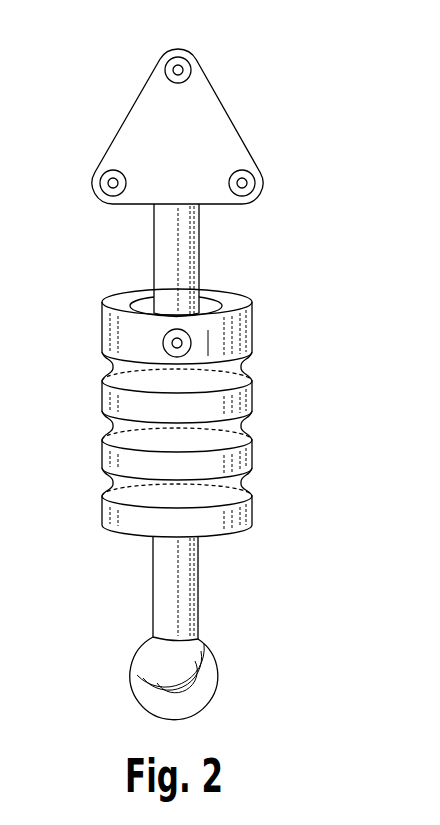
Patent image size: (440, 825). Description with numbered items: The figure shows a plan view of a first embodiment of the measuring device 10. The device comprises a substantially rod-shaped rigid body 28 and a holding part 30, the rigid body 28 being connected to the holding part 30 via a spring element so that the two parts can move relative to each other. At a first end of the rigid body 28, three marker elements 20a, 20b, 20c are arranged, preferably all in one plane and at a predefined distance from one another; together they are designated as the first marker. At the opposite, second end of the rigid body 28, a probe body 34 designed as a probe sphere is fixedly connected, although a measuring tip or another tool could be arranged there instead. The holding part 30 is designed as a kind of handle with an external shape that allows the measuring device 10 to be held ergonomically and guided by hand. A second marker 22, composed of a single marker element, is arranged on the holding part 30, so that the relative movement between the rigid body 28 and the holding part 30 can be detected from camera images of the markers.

The measuring device 10 is at (300, 137).
The marker element 20a is at (256, 184).
The marker element 20b is at (100, 184).
The marker element 20c is at (189, 63).
The second marker 22 is at (192, 342).
The rigid body 28 is at (165, 246).
The holding part 30 is at (101, 331).
The probe body 34 is at (220, 670).